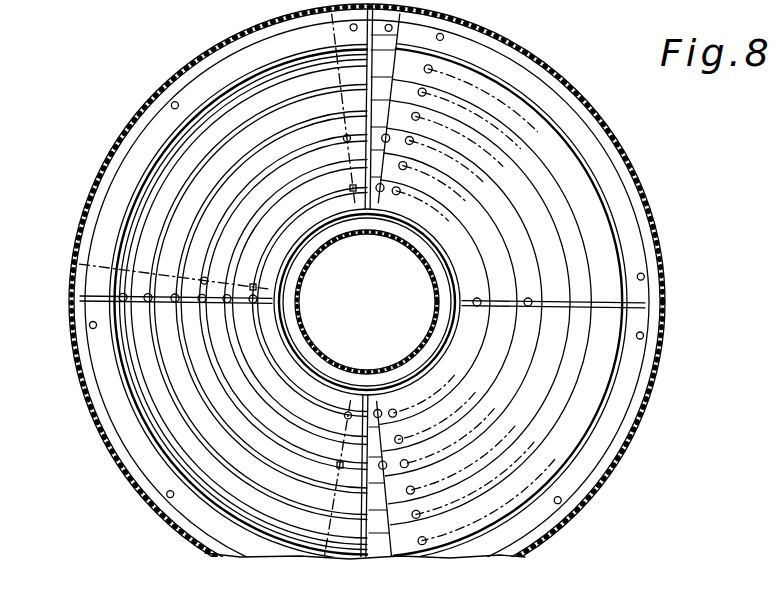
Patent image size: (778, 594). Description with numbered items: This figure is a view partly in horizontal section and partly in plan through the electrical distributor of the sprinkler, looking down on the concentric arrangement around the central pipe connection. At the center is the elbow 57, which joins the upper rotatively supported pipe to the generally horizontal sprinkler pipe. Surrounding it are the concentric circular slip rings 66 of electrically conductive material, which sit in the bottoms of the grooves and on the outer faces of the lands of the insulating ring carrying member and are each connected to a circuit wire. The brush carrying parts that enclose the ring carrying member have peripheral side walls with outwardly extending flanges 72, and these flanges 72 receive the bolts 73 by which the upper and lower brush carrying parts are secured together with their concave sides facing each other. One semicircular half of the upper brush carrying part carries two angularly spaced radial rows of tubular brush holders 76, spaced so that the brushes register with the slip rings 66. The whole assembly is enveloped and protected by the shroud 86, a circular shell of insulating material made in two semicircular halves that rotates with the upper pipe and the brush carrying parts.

The elbow 57 is at (318, 262).
The slip ring 66 is at (197, 393).
The outwardly extending flange 72 is at (142, 137).
The bolt 73 is at (171, 103).
The tubular brush holder 76 is at (146, 296).
The shroud 86 is at (640, 175).